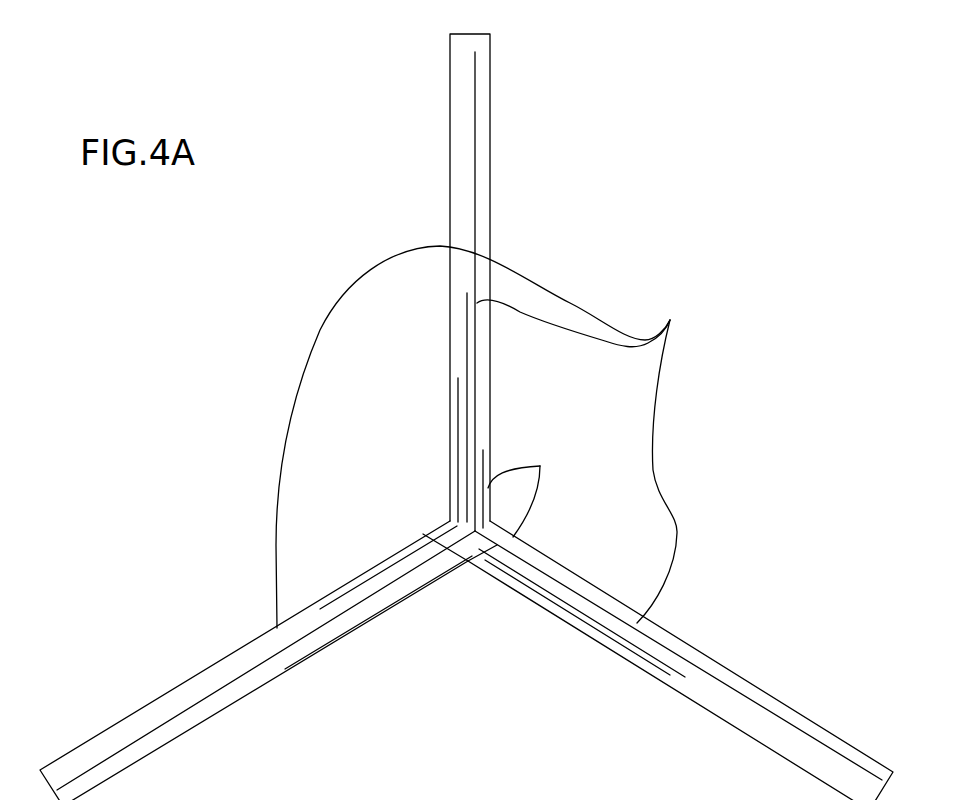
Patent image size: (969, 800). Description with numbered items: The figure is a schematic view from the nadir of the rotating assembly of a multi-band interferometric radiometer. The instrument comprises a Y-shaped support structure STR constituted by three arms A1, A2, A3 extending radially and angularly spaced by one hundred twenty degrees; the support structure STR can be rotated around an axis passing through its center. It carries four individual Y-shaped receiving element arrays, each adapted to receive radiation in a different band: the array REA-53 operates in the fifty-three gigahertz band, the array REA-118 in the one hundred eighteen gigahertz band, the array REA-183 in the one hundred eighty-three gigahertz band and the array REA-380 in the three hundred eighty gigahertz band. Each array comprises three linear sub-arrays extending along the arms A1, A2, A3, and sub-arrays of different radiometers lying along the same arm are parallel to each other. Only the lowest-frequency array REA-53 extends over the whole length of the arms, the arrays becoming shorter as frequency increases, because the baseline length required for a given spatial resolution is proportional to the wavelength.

The support structure STR is at (412, 174).
The arm A1 is at (203, 720).
The arm A2 is at (699, 699).
The arm A3 is at (491, 158).
The receiving element array REA-53 is at (512, 437).
The receiving element array REA-183 is at (427, 688).
The receiving element array REA-380 is at (567, 492).
The receiving element array REA-118 is at (467, 347).